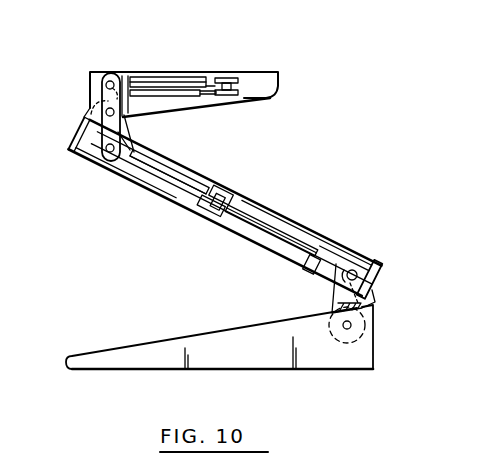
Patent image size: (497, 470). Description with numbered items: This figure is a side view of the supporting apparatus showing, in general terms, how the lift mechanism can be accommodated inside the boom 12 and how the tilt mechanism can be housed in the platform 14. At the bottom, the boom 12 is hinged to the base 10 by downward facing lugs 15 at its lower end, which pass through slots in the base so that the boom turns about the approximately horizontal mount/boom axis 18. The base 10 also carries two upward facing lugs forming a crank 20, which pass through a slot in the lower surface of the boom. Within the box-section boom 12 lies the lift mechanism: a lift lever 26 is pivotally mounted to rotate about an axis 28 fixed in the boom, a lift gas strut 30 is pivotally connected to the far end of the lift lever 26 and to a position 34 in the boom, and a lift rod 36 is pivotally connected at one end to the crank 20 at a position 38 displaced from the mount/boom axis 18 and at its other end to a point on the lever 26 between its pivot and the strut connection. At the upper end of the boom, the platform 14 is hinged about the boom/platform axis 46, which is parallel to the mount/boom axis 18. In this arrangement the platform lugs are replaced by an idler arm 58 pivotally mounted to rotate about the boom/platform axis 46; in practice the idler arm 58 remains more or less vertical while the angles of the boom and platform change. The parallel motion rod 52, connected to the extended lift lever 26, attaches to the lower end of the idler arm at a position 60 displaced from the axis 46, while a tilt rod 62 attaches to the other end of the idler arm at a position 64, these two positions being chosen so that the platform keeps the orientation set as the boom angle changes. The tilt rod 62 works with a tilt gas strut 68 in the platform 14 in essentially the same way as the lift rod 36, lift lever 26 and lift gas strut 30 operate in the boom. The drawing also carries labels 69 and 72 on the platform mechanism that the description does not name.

The base 10 is at (106, 348).
The boom 12 is at (196, 173).
The platform 14 is at (278, 88).
The downward facing lugs 15 is at (331, 297).
The mount/boom axis 18 is at (373, 318).
The crank 20 is at (368, 302).
The lift lever 26 is at (232, 190).
The axis 28 is at (210, 223).
The lift gas strut 30 is at (347, 217).
The position 34 is at (312, 278).
The lift rod 36 is at (265, 256).
The position 38 is at (358, 270).
The boom/platform axis 46 is at (100, 101).
The parallel motion rod 52 is at (165, 186).
The idler arm 58 is at (90, 111).
The position 60 is at (104, 166).
The tilt rod 62 is at (152, 88).
The position 64 is at (104, 78).
The tilt gas strut 68 is at (192, 76).
The link 69 is at (143, 114).
The roller 72 is at (232, 97).